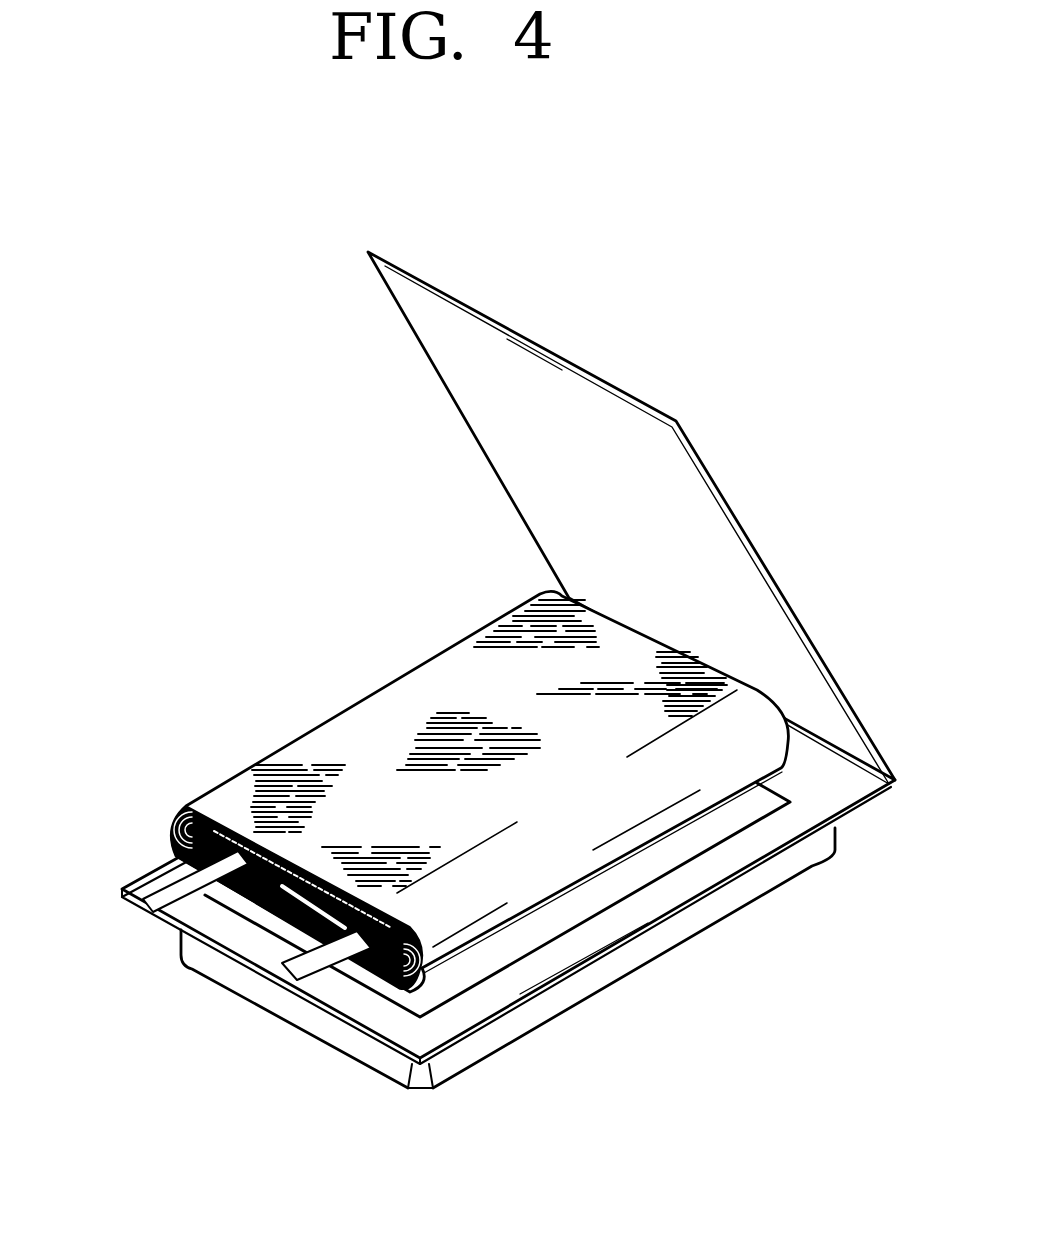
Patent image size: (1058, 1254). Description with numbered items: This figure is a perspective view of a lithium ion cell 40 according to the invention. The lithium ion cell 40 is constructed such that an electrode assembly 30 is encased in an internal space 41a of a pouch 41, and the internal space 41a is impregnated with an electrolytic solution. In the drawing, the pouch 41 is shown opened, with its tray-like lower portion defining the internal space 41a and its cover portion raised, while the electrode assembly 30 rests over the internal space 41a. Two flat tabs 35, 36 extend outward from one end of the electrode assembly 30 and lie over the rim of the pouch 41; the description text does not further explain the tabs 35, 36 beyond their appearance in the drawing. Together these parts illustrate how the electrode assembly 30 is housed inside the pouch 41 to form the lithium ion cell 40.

The electrode assembly 30 is at (152, 808).
The first electrode tab 35 is at (181, 882).
The second electrode tab 36 is at (287, 966).
The lithium ion cell 40 is at (812, 507).
The pouch 41 is at (733, 899).
The internal space 41a is at (717, 830).